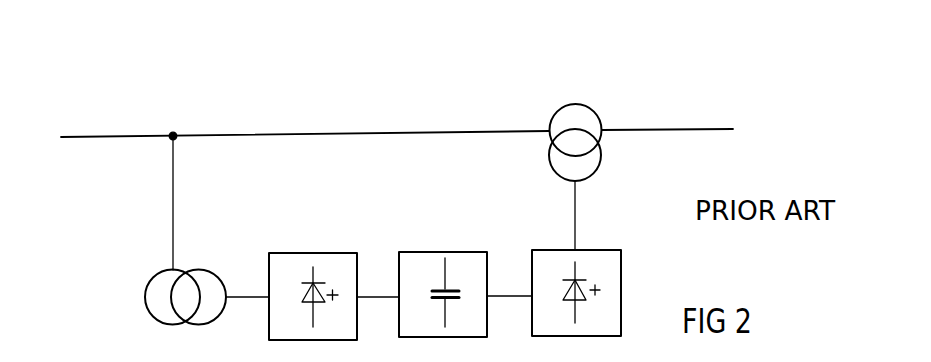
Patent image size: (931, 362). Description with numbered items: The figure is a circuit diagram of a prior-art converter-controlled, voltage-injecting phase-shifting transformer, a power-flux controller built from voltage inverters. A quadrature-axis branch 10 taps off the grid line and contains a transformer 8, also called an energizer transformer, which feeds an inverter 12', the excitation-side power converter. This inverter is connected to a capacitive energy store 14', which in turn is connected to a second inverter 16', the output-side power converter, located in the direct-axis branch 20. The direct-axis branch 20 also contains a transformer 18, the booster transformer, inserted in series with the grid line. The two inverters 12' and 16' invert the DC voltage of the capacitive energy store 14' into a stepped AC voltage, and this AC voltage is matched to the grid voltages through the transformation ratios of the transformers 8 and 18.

The transformer 8 is at (200, 271).
The quadrature-axis branch 10 is at (171, 199).
The inverter 12' is at (318, 278).
The capacitive energy store 14' is at (444, 277).
The inverter 16' is at (582, 276).
The transformer 18 is at (602, 153).
The direct-axis branch 20 is at (362, 133).